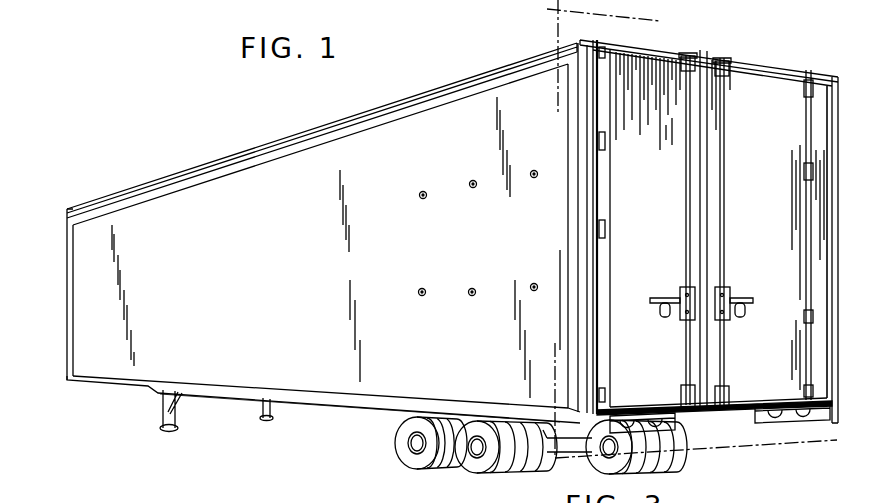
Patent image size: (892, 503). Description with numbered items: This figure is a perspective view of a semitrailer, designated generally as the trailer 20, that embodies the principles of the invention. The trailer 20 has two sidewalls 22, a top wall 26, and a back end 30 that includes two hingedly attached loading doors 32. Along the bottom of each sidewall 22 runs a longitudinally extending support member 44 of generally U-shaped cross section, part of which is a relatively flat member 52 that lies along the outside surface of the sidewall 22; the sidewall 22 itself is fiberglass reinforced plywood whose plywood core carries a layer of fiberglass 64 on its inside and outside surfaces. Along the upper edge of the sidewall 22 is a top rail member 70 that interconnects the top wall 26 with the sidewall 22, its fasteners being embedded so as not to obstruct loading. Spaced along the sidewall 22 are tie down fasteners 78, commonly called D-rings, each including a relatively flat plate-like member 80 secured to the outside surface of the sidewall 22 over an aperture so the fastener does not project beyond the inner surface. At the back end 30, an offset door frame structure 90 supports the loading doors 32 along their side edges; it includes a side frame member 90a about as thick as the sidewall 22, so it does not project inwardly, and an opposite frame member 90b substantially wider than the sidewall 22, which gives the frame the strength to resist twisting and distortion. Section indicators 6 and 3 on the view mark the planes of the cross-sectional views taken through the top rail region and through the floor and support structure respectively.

The semitrailer 20 is at (228, 146).
The sidewall 22 is at (386, 364).
The top wall 26 is at (751, 62).
The back end 30 is at (757, 106).
The loading doors 32 is at (660, 73).
The support member 44 is at (373, 410).
The flat member 52 is at (306, 397).
The layer of fiberglass 64 is at (302, 314).
The top rail member 70 is at (371, 130).
The tie down fasteners 78 is at (468, 194).
The plate-like member 80 is at (535, 180).
The offset door frame structure 90 is at (824, 80).
The side frame member 90a is at (591, 222).
The frame member 90b is at (820, 205).
The section line 6- 6 is at (659, 25).
The section line 3- 3 is at (557, 358).